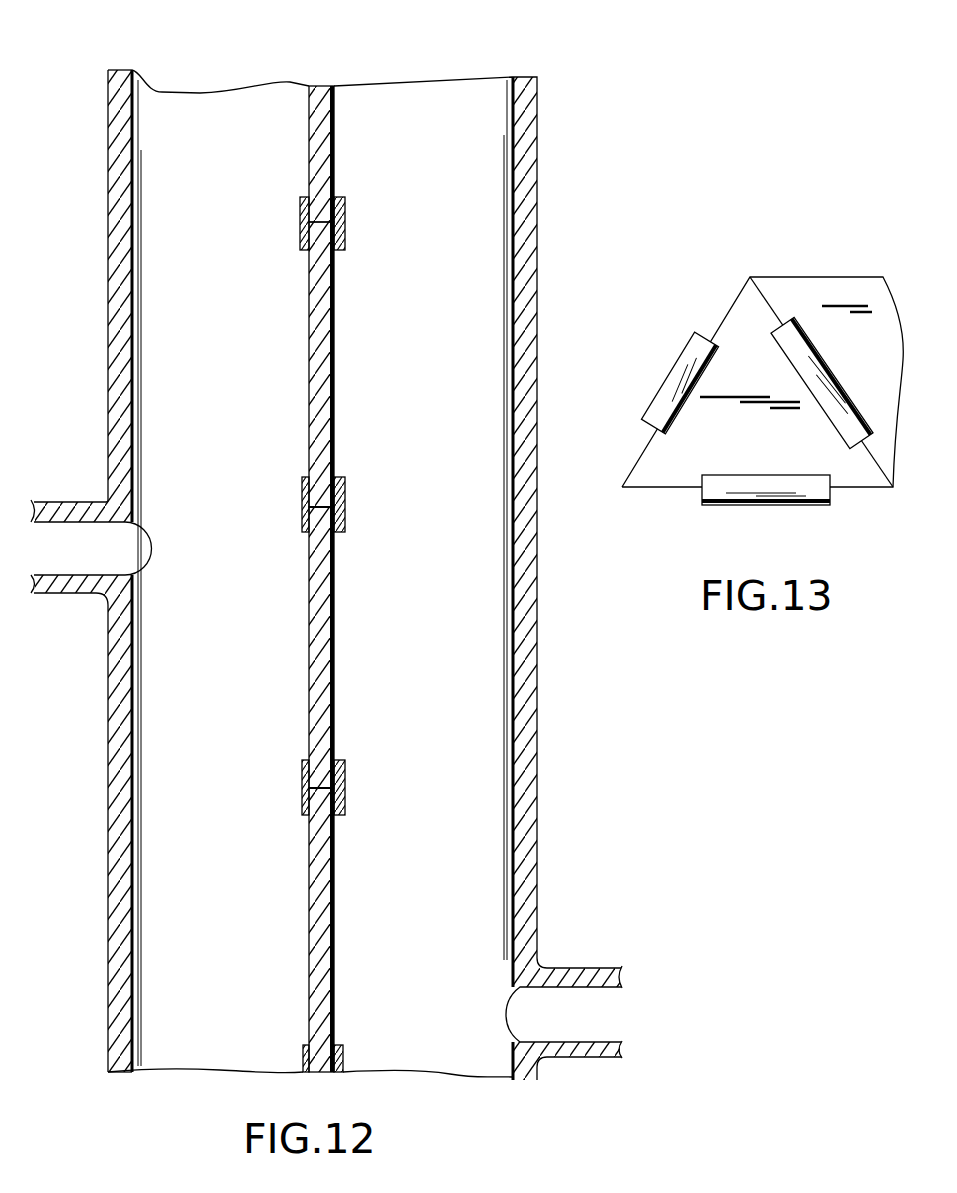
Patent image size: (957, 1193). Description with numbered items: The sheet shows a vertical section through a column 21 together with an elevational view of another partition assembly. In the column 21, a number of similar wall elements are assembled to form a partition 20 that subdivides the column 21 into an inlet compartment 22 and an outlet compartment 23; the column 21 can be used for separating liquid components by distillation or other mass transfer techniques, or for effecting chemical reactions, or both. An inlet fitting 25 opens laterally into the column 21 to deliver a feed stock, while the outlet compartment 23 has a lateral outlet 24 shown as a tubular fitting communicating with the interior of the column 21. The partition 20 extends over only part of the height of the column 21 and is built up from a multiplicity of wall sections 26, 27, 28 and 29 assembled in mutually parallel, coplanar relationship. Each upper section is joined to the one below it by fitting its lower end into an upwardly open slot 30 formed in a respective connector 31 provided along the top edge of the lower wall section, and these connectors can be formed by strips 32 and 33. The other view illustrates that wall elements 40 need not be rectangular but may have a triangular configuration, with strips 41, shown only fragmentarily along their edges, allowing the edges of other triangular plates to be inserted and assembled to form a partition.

In FIG. 12, the partition 20 is at (358, 112).
In FIG. 12, the column 21 is at (116, 243).
In FIG. 12, the inlet compartment 22 is at (136, 925).
In FIG. 12, the outlet compartment 23 is at (506, 665).
In FIG. 12, the lateral outlet 24 is at (585, 966).
In FIG. 12, the inlet fitting 25 is at (63, 602).
In FIG. 12, the wall section 26 is at (334, 928).
In FIG. 12, the wall section 27 is at (334, 630).
In FIG. 12, the wall section 28 is at (334, 356).
In FIG. 12, the wall section 29 is at (334, 160).
In FIG. 12, the upwardly open slot 30 is at (330, 772).
In FIG. 12, the connector 31 is at (296, 802).
In FIG. 12, the strip 32 is at (345, 507).
In FIG. 12, the strip 33 is at (309, 507).
In FIG. 13, the wall element 40 is at (818, 295).
In FIG. 13, the strip 41 is at (678, 378).